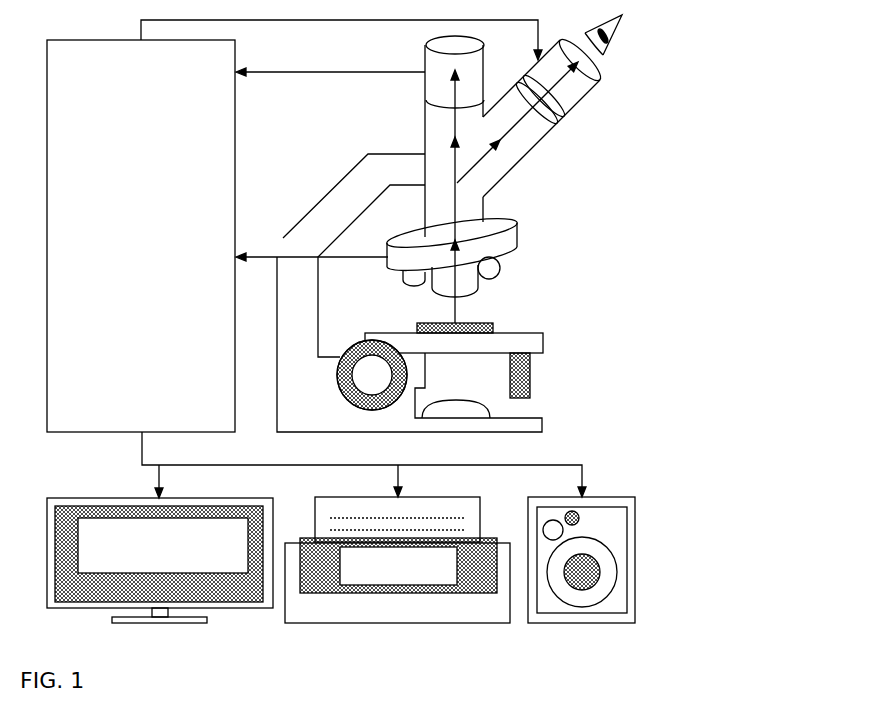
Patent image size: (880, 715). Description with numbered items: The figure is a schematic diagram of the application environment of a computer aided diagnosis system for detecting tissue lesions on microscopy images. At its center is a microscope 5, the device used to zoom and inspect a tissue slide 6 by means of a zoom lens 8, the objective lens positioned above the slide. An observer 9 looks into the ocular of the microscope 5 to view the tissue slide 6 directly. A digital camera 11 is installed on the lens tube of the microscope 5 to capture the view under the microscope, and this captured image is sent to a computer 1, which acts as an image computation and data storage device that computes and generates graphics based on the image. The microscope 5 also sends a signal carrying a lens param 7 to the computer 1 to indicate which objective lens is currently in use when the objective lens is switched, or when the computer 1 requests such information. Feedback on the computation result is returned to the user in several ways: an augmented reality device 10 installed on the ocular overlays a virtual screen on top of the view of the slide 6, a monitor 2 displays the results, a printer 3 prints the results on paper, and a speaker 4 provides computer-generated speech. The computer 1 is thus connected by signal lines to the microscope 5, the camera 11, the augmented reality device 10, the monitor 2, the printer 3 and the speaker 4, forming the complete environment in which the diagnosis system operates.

The computer 1 is at (141, 236).
The monitor 2 is at (160, 560).
The printer 3 is at (397, 560).
The speaker 4 is at (632, 532).
The microscope 5 is at (547, 418).
The tissue slide 6 is at (500, 323).
The lens param 7 is at (343, 255).
The zoom lens 8 is at (505, 257).
The observer 9 is at (617, 35).
The augmented reality device 10 is at (597, 124).
The camera 11 is at (417, 77).